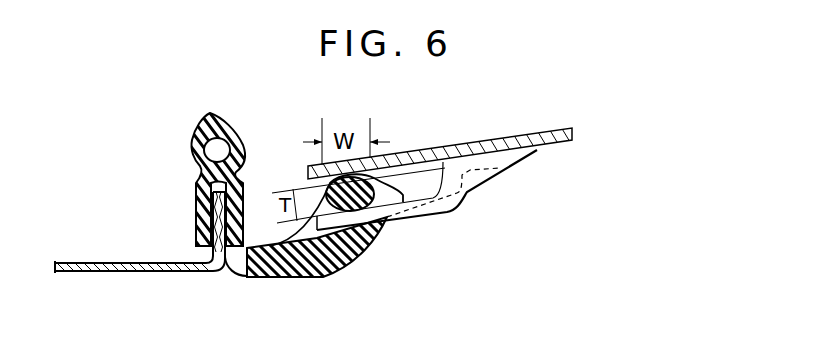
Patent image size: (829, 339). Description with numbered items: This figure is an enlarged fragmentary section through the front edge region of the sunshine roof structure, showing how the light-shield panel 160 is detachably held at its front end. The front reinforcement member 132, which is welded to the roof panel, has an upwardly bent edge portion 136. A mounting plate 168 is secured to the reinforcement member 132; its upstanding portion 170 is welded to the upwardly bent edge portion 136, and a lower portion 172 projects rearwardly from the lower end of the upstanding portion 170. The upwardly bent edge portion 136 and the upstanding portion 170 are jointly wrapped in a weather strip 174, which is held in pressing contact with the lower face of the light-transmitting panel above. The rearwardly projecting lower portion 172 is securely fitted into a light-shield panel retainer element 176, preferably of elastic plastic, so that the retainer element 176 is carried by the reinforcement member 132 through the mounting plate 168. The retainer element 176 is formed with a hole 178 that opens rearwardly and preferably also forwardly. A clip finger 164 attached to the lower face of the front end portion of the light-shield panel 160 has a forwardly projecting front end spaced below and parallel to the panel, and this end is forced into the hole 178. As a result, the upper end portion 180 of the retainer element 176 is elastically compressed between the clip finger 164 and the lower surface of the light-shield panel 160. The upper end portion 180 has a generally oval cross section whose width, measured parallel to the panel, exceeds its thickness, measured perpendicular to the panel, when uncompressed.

The front reinforcement member 132 is at (108, 272).
The upwardly bent edge portion 136 is at (211, 252).
The light-shield panel 160 is at (537, 133).
The clip finger 164 is at (480, 184).
The mounting plate 168 is at (226, 275).
The upstanding portion 170 is at (228, 252).
The lower portion 172 is at (322, 266).
The weather strip 174 is at (195, 140).
The light-shield panel retainer element 176 is at (345, 266).
The hole 178 is at (382, 220).
The upper end portion 180 is at (385, 192).